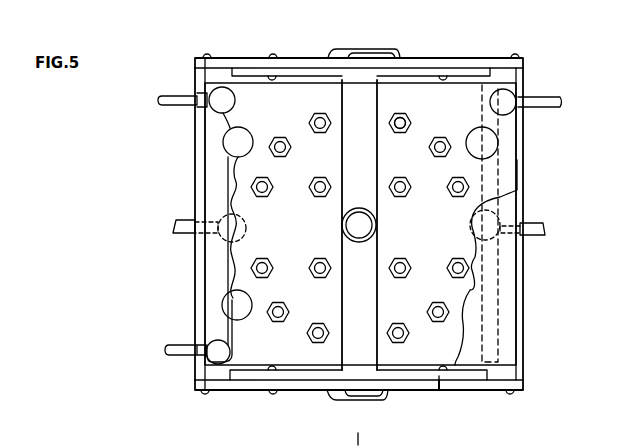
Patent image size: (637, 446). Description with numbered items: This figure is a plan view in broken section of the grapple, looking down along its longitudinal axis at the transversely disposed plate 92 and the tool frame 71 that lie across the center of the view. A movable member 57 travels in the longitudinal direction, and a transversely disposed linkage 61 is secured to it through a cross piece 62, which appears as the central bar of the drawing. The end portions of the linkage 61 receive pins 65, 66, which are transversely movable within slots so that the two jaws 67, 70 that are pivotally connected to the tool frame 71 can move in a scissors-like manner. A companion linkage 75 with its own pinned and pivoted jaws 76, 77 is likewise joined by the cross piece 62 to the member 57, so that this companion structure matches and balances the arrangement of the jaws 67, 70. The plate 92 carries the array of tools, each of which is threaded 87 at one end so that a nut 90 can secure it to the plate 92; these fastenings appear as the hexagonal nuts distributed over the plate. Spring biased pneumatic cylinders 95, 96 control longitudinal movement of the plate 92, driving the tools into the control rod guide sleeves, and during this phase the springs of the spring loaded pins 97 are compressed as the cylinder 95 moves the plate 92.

The member 57 is at (372, 212).
The linkage 61 is at (413, 378).
The cross piece 62 is at (365, 263).
The pin 65 is at (448, 390).
The pin 66 is at (273, 392).
The jaw 67 is at (440, 375).
The jaw 70 is at (307, 388).
The tool frame 71 is at (507, 322).
The companion linkage 75 is at (257, 74).
The jaw 76 is at (410, 73).
The jaw 77 is at (313, 67).
The thread 87 is at (403, 119).
The nut 90 is at (398, 131).
The plate 92 is at (463, 97).
The pneumatic cylinder 95 is at (212, 107).
The pneumatic cylinder 96 is at (220, 238).
The spring loaded pin 97 is at (246, 135).